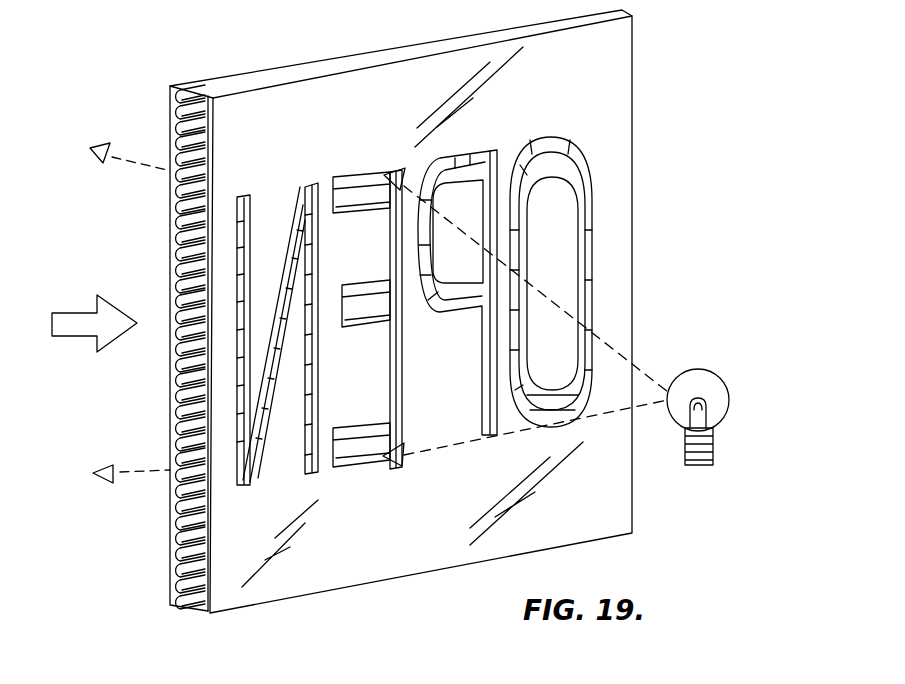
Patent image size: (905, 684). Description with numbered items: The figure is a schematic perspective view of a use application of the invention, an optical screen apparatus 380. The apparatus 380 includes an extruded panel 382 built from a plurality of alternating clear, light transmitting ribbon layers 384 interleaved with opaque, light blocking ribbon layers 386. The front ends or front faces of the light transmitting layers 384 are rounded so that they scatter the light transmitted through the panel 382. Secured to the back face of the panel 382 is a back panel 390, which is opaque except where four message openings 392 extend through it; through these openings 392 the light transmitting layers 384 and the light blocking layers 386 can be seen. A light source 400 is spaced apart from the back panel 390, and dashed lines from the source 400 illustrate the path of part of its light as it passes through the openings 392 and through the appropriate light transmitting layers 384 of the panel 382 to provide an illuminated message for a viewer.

The optical screen apparatus 380 is at (666, 92).
The extruded panel 382 is at (171, 241).
The light transmitting ribbon layers 384 is at (375, 292).
The light blocking ribbon layers 386 is at (527, 390).
The back panel 390 is at (630, 153).
The message openings 392 is at (462, 157).
The light source 400 is at (705, 370).